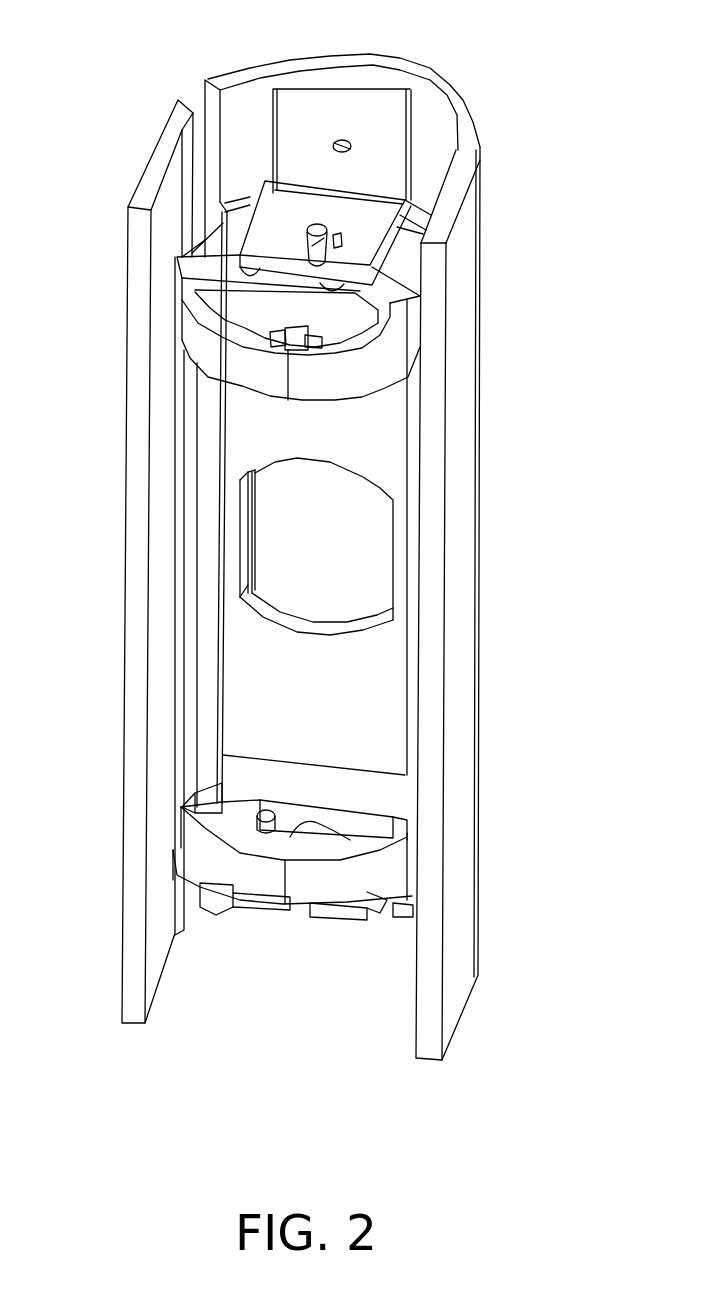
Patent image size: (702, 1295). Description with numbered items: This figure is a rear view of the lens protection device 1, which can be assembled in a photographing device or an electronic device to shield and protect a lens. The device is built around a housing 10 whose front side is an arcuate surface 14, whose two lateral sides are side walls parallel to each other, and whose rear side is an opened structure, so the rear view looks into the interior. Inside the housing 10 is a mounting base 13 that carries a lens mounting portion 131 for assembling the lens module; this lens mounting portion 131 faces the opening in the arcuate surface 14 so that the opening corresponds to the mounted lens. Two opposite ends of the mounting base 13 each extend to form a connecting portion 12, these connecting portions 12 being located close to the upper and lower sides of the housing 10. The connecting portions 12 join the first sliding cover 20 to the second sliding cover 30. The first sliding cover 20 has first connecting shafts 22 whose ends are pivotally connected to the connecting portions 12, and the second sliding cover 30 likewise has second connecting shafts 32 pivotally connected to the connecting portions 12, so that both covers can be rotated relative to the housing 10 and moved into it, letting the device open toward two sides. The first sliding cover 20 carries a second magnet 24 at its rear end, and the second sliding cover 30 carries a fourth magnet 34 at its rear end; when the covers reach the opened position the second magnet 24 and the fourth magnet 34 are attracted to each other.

The lens protection device 1 is at (118, 42).
The housing 10 is at (478, 147).
The connecting portion 12 is at (278, 220).
The mounting base 13 is at (340, 78).
The lens mounting portion 131 is at (393, 537).
The arcuate surface 14 is at (427, 80).
The first sliding cover 20 is at (392, 362).
The first connecting shaft 22 is at (392, 288).
The second magnet 24 is at (318, 343).
The second sliding cover 30 is at (182, 340).
The second connecting shaft 32 is at (205, 266).
The fourth magnet 34 is at (272, 342).